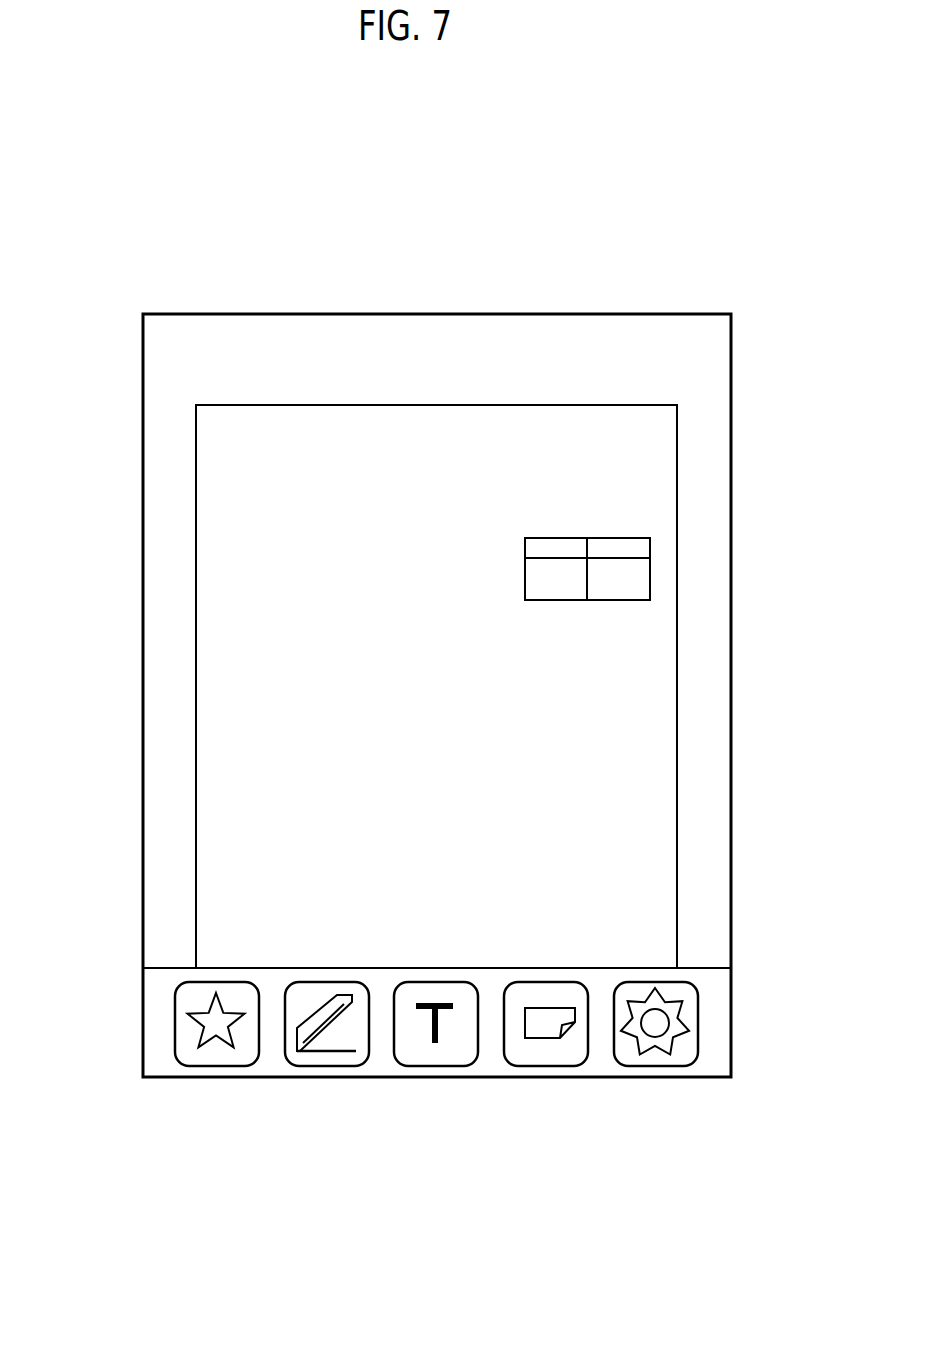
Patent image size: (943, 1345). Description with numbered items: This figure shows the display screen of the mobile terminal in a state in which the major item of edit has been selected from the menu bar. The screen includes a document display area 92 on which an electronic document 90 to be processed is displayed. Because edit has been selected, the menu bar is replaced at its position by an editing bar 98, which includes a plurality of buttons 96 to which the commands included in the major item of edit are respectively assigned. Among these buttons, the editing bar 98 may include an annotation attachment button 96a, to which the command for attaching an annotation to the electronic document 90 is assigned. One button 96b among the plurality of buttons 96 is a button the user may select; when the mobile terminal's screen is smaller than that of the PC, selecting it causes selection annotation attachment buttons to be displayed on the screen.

The electronic document 90 is at (677, 483).
The document display area 92 is at (101, 315).
The buttons 96 is at (436, 1101).
The annotation attachment button 96a is at (325, 1066).
The button 96b is at (216, 1066).
The editing bar 98 is at (127, 1028).